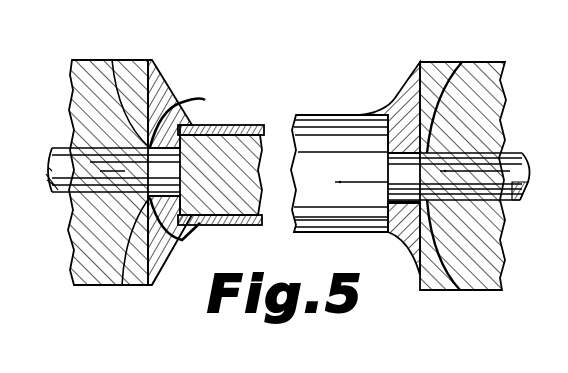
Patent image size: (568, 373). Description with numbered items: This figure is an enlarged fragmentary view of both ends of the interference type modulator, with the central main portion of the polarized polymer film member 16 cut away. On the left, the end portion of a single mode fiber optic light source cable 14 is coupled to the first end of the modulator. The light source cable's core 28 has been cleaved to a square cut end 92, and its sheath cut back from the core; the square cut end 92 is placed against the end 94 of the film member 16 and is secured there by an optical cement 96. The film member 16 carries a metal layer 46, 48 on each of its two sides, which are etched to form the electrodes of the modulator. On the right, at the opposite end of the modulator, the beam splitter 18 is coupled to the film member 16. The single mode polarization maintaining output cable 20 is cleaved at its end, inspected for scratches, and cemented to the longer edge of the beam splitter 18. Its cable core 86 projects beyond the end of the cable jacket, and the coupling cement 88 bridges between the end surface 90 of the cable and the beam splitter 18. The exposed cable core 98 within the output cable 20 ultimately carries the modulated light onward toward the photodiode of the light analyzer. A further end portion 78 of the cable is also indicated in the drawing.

The single mode fiber optic light source cable 14 is at (112, 60).
The polarized polymer film member 16 is at (489, 6).
The beam splitter 18 is at (330, 130).
The single mode polarization maintaining fiber optic cable 20 is at (462, 292).
The cable core 28 is at (152, 100).
The metal layer 46 is at (242, 123).
The metal layer 48 is at (230, 225).
The cable end 78 is at (567, 99).
The cable core 86 is at (461, 62).
The coupling cement 88 is at (395, 97).
The end surface 90 is at (416, 262).
The square cut end 92 is at (122, 285).
The end of member 94 is at (200, 101).
The optical cement 96 is at (163, 235).
The cable core 98 is at (496, 177).